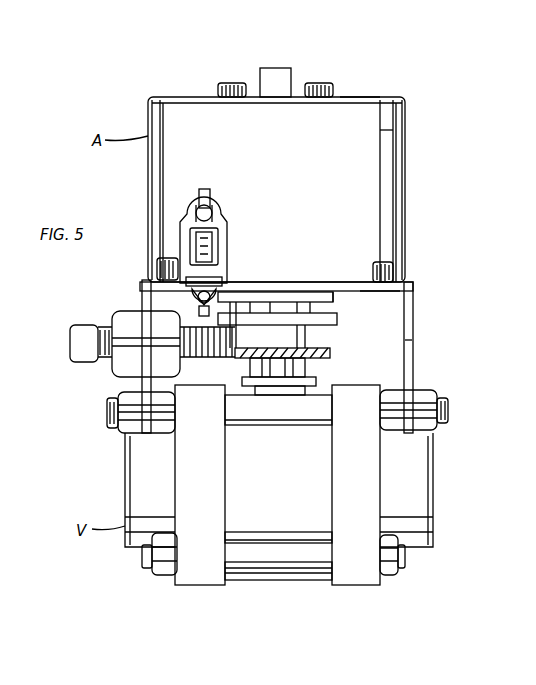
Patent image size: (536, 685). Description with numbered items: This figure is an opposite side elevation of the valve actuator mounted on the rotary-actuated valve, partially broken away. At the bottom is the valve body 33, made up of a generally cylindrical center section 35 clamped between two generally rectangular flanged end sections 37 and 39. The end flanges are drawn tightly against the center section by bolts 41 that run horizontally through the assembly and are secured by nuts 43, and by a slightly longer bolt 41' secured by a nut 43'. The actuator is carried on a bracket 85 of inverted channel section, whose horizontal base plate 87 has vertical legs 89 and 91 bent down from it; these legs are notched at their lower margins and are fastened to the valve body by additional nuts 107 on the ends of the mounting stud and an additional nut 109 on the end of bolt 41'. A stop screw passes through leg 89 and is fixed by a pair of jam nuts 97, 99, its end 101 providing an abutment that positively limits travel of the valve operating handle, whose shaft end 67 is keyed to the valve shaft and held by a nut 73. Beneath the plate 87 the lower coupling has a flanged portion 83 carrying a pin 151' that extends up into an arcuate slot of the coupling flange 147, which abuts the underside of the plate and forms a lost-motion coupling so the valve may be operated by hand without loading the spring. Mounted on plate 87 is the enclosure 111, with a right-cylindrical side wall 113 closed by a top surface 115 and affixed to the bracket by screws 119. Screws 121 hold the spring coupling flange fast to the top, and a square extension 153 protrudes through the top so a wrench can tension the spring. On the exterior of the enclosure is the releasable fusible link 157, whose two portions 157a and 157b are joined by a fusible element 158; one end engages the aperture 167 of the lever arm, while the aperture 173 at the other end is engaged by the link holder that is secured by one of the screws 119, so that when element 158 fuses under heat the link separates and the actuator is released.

The body 33 is at (296, 583).
The center section 35 is at (247, 583).
The flanged end section 37 is at (196, 586).
The flanged end section 39 is at (356, 586).
The bolt 41 is at (406, 558).
The bolt 41' is at (414, 429).
The nut 43 is at (138, 571).
The nut 43' is at (146, 435).
The end of operating handle 67 is at (330, 353).
The nut 73 is at (252, 368).
The flanged portion 83 is at (338, 318).
The bracket 85 is at (412, 287).
The base plate 87 is at (366, 293).
The leg 89 is at (142, 288).
The leg 91 is at (413, 306).
The jam nut 97 is at (70, 348).
The jam nut 99 is at (158, 322).
The end of screw 101 is at (234, 343).
The nut 107 is at (416, 392).
The nut 109 is at (120, 426).
The enclosure 111 is at (405, 170).
The side wall 113 is at (384, 133).
The top surface 115 is at (366, 92).
The screw 119 is at (164, 262).
The screw 121 is at (232, 82).
The flange 147 is at (335, 297).
The pin 151' is at (275, 291).
The extension 153 is at (278, 68).
The releasable link 157 is at (228, 243).
The link portion 157a is at (188, 281).
The link portion 157b is at (200, 197).
The fusible element 158 is at (193, 246).
The aperture 167 is at (216, 292).
The aperture 173 is at (214, 212).